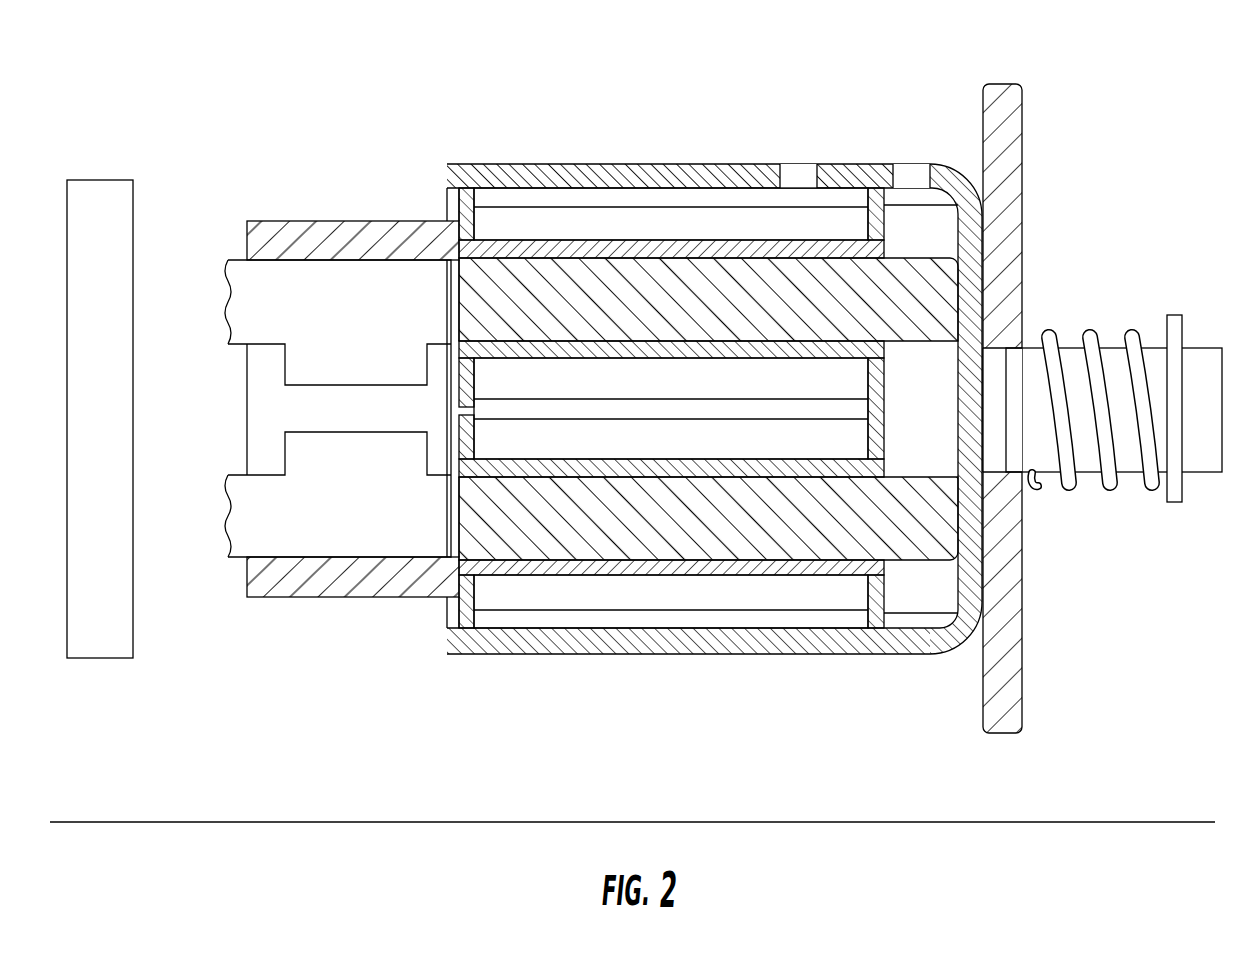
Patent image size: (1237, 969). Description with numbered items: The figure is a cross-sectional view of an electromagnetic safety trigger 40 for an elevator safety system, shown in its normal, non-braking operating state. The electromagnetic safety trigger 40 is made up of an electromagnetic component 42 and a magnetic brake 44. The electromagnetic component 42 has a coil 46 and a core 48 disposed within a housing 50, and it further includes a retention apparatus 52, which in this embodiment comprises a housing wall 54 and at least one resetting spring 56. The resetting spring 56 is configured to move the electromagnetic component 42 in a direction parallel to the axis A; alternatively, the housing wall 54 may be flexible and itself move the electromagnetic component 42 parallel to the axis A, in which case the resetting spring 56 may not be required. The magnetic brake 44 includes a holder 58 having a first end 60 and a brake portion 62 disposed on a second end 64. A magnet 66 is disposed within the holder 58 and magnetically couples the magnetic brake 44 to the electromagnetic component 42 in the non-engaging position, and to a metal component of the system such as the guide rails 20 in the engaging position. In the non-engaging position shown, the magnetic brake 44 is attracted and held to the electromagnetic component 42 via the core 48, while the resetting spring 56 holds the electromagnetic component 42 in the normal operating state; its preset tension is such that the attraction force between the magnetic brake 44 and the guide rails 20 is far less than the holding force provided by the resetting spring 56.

The guide rails 20 is at (96, 660).
The electromagnetic safety trigger 40 is at (1132, 132).
The electromagnetic component 42 is at (739, 700).
The magnetic brake 44 is at (240, 200).
The coil 46 is at (707, 222).
The core 48 is at (613, 540).
The housing 50 is at (537, 164).
The retention apparatus 52 is at (1108, 660).
The housing wall 54 is at (1022, 140).
The resetting spring 56 is at (1127, 485).
The holder 58 is at (307, 220).
The first end 60 is at (440, 600).
The brake portion 62 is at (232, 553).
The second end 64 is at (247, 598).
The magnet 66 is at (314, 480).
The axis A is at (1002, 822).